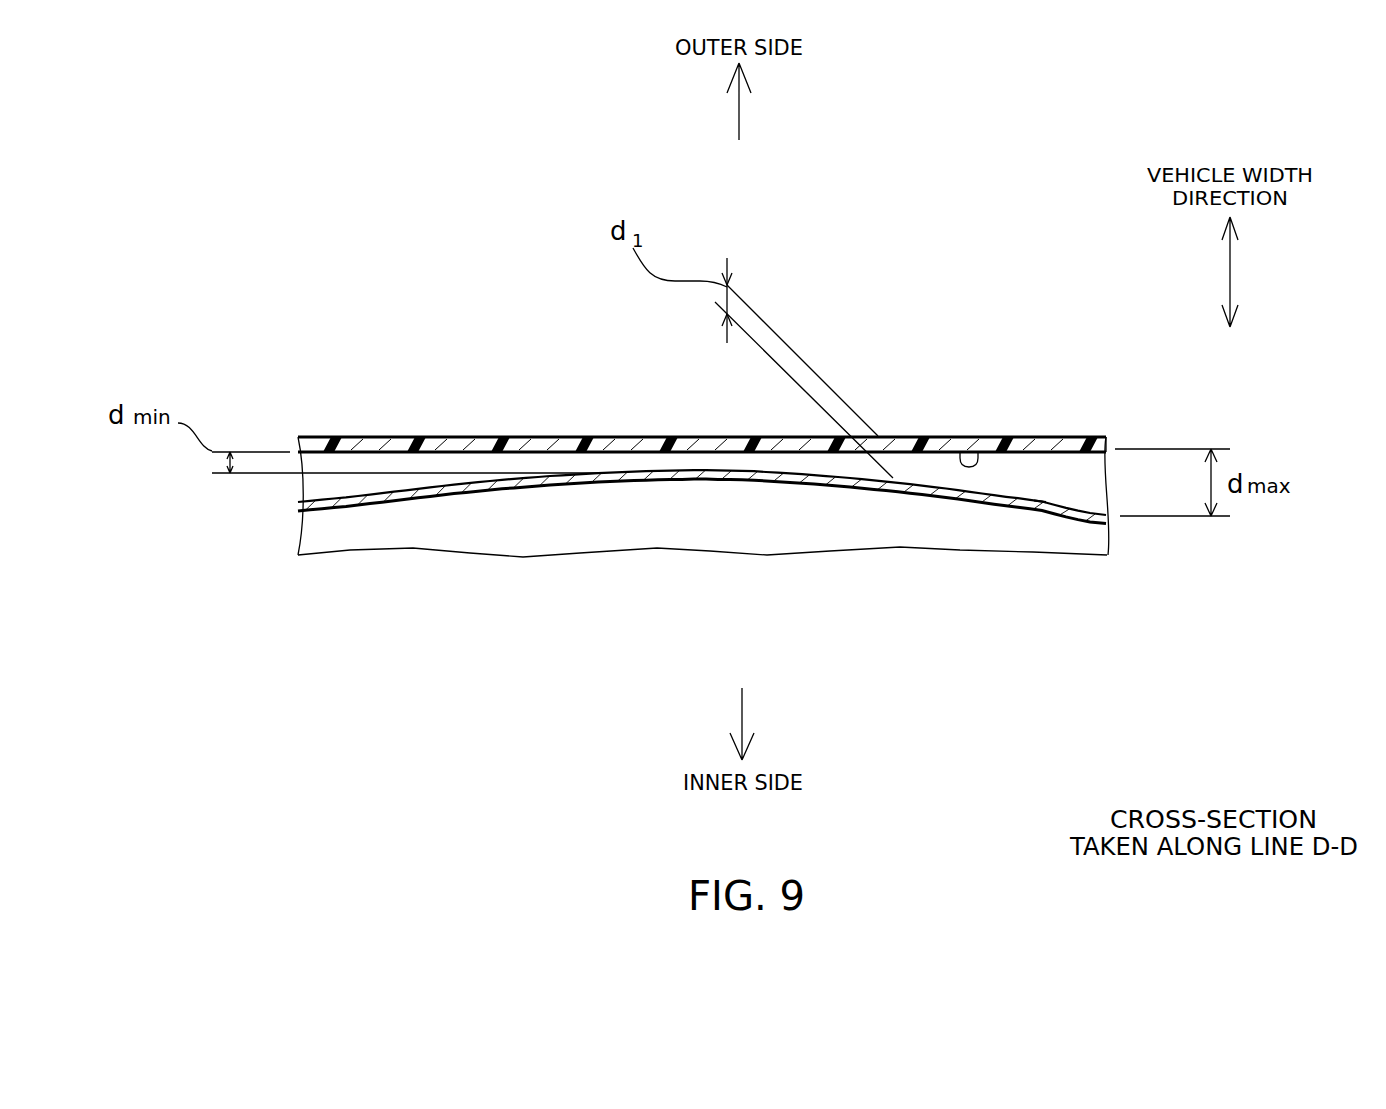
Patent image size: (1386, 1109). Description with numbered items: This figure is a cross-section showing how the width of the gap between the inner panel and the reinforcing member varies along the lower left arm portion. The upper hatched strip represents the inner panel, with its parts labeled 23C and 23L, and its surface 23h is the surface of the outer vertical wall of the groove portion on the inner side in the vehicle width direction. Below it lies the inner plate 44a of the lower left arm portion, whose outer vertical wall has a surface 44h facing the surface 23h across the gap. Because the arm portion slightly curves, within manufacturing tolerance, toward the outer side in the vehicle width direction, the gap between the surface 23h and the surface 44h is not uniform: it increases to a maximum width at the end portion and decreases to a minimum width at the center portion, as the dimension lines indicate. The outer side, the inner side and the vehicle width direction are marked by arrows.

The surface of outer vertical wall 23h is at (978, 452).
The core of upper member 23C is at (1027, 437).
The upper member layer 23L is at (1062, 442).
The inner plate 44a is at (1053, 510).
The surface of outer vertical wall 44h is at (1040, 498).